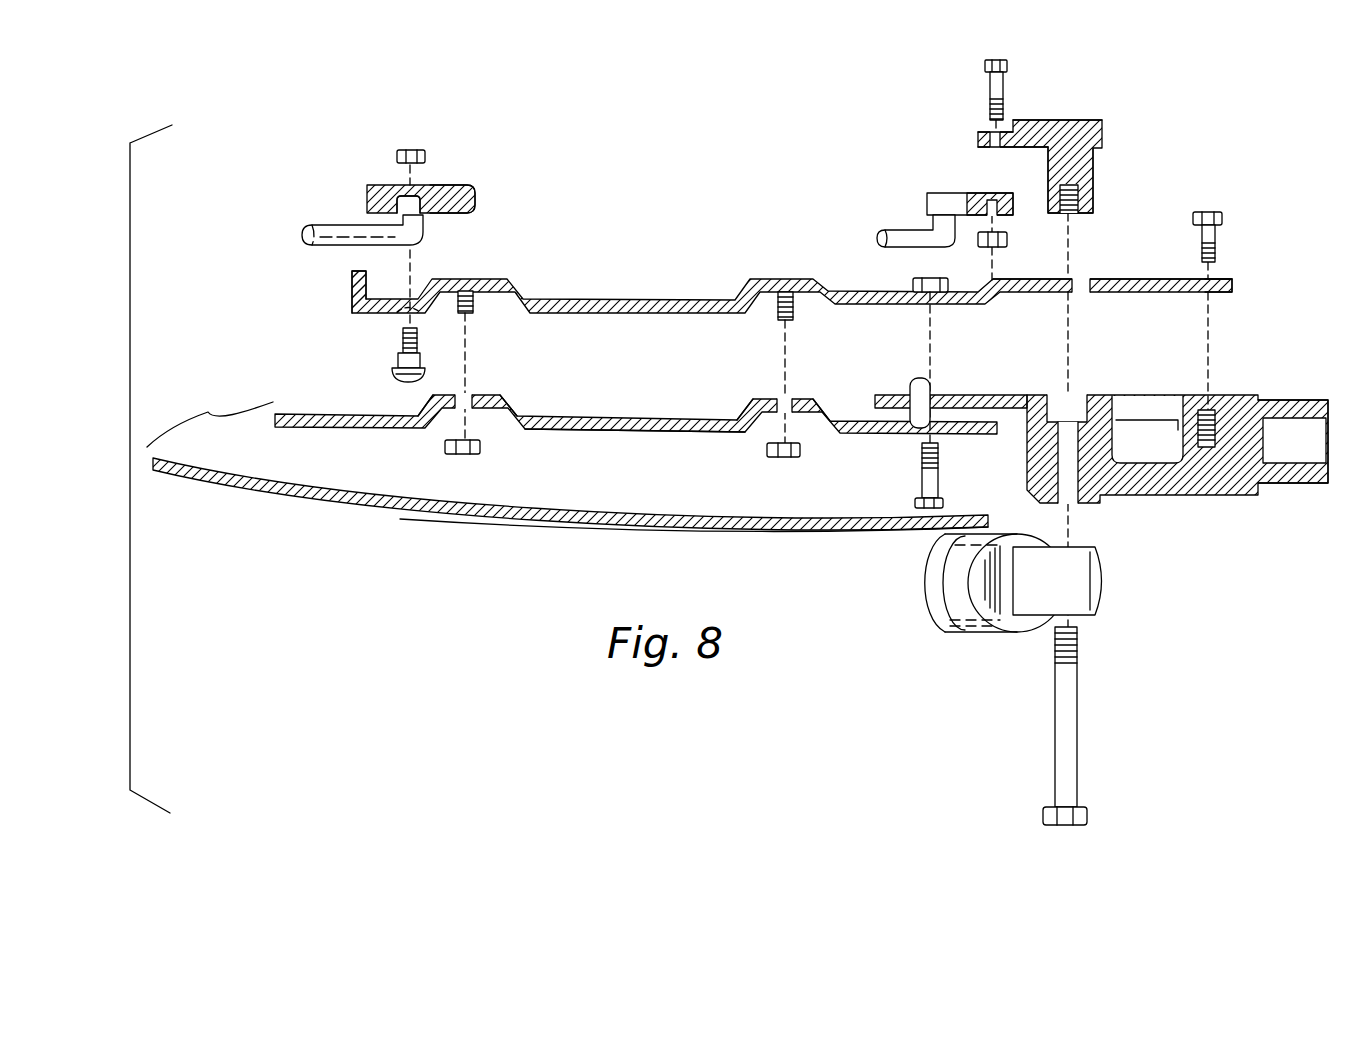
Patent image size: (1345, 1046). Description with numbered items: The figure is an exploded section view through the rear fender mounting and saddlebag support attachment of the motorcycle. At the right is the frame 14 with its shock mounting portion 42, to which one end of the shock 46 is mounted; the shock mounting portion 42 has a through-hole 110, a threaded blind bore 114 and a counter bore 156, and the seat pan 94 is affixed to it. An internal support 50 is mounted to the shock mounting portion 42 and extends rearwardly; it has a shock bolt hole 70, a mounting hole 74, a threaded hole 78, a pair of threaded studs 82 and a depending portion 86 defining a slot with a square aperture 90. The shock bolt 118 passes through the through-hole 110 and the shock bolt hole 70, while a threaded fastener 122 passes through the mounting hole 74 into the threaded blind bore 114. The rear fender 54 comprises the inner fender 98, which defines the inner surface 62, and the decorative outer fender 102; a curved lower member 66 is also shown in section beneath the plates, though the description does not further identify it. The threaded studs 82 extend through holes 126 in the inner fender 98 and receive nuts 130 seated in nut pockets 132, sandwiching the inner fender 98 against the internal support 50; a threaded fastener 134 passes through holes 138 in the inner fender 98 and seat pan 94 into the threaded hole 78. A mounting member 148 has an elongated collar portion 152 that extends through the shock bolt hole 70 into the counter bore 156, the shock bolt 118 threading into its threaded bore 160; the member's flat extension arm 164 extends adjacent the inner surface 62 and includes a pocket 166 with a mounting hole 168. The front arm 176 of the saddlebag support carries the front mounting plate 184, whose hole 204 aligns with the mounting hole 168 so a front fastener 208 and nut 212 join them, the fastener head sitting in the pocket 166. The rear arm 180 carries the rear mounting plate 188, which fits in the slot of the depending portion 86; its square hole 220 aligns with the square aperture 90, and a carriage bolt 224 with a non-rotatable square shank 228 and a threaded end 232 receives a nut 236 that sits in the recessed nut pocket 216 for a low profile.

The frame 14 is at (1300, 400).
The shock mounting portion 42 is at (1148, 438).
The shock 46 is at (937, 629).
The internal support 50 is at (772, 290).
The rear fender 54 is at (208, 410).
The inner surface 62 is at (636, 418).
The curved skid plate 66 is at (570, 514).
The shock bolt hole 70 is at (1077, 283).
The mounting hole 74 is at (1218, 279).
The threaded hole 78 is at (912, 286).
The threaded stud 82 is at (472, 309).
The depending portion 86 is at (346, 296).
The square aperture 90 is at (395, 313).
The seat pan 94 is at (986, 395).
The inner fender 98 is at (617, 432).
The outer fender 102 is at (698, 538).
The through-hole 110 is at (1058, 453).
The threaded blind bore 114 is at (1211, 410).
The shock bolt 118 is at (1058, 699).
The threaded fastener 122 is at (1216, 216).
The hole 126 is at (466, 396).
The nut 130 is at (445, 447).
The nut pocket 132 is at (500, 419).
The threaded fastener 134 is at (921, 466).
The hole 138 is at (922, 378).
The mounting member 148 is at (1061, 141).
The collar portion 152 is at (1094, 170).
The counter bore 156 is at (1078, 398).
The threaded bore 160 is at (1074, 206).
The extension arm 164 is at (1040, 121).
The pocket 166 is at (1001, 132).
The mounting hole 168 is at (978, 141).
The front arm 176 is at (893, 233).
The rear arm 180 is at (337, 226).
The front mounting plate 184 is at (952, 182).
The rear mounting plate 188 is at (476, 200).
The hole 204 is at (995, 192).
The front fastener 208 is at (985, 79).
The nut 212 is at (978, 241).
The nut pocket 216 is at (441, 179).
The square hole 220 is at (406, 196).
The carriage bolt 224 is at (421, 360).
The square shank 228 is at (397, 358).
The threaded end 232 is at (418, 338).
The nut 236 is at (412, 147).